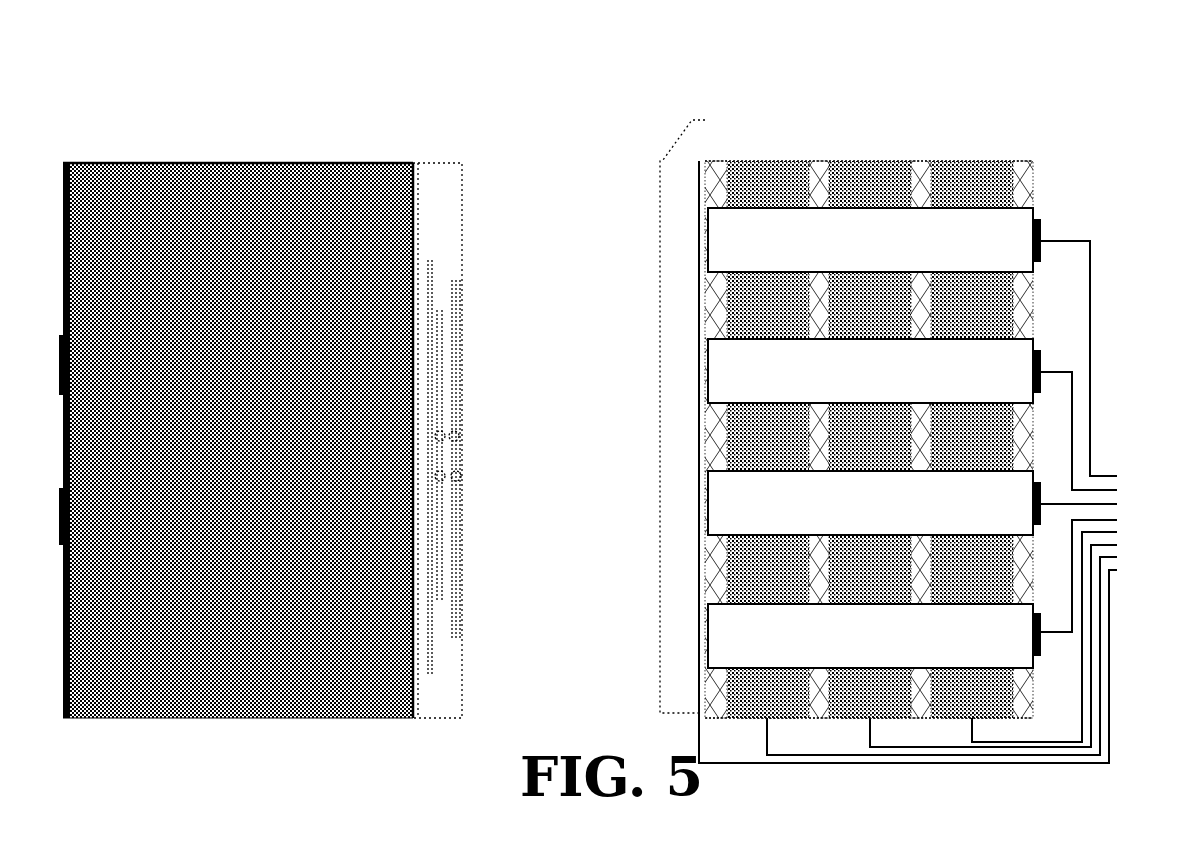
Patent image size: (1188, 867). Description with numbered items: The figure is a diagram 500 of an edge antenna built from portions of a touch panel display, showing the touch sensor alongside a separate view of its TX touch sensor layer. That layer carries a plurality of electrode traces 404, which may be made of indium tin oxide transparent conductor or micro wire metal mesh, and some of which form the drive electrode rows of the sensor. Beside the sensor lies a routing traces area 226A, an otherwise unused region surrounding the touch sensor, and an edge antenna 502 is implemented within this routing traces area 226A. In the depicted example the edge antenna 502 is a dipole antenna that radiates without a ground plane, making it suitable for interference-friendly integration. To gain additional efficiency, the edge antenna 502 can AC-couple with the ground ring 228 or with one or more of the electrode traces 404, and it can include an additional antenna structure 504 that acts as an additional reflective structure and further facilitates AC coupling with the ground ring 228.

The electrode traces 404 is at (372, 146).
The routing traces area 226A is at (582, 414).
The edge antenna 502 is at (485, 467).
The additional antenna structure 504 is at (420, 416).
The ground ring 228 is at (774, 477).
The diagram 500 is at (1110, 80).